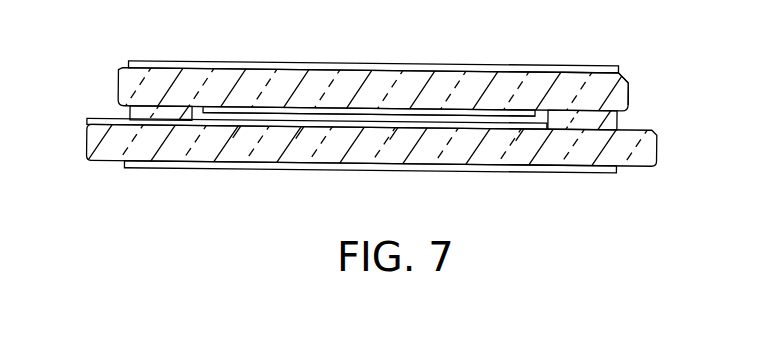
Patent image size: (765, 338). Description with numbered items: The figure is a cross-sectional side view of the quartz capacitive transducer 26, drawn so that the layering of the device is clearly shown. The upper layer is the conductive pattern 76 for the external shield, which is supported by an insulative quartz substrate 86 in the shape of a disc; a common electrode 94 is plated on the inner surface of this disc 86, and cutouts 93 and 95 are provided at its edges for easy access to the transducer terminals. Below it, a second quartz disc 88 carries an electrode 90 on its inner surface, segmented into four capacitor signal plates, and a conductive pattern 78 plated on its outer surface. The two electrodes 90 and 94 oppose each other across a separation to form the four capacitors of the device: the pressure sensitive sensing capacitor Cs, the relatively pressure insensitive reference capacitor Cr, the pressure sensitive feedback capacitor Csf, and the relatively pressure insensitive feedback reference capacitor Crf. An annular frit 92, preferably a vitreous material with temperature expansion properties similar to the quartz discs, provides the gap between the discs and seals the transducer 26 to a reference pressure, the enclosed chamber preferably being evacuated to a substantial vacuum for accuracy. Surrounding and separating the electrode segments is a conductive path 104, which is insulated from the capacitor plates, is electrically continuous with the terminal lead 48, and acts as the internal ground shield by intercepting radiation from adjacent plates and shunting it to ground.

The conductive pattern 76 is at (197, 63).
The cutout 95 is at (118, 82).
The transducer 26 is at (566, 68).
The insulative quartz substrate 86 is at (622, 74).
The cutout 93 is at (630, 92).
The common electrode 94 is at (417, 108).
The electrode 90 is at (507, 121).
The annular frit 92 is at (165, 105).
The conductive path 104 is at (537, 130).
The transducer terminal 48 is at (97, 118).
The conductive pattern 78 is at (265, 167).
The quartz disc 88 is at (623, 157).
The feedback reference capacitor Crf is at (236, 130).
The feedback capacitor Csf is at (291, 128).
The sensing capacitor Cs is at (390, 128).
The reference capacitor Cr is at (506, 130).